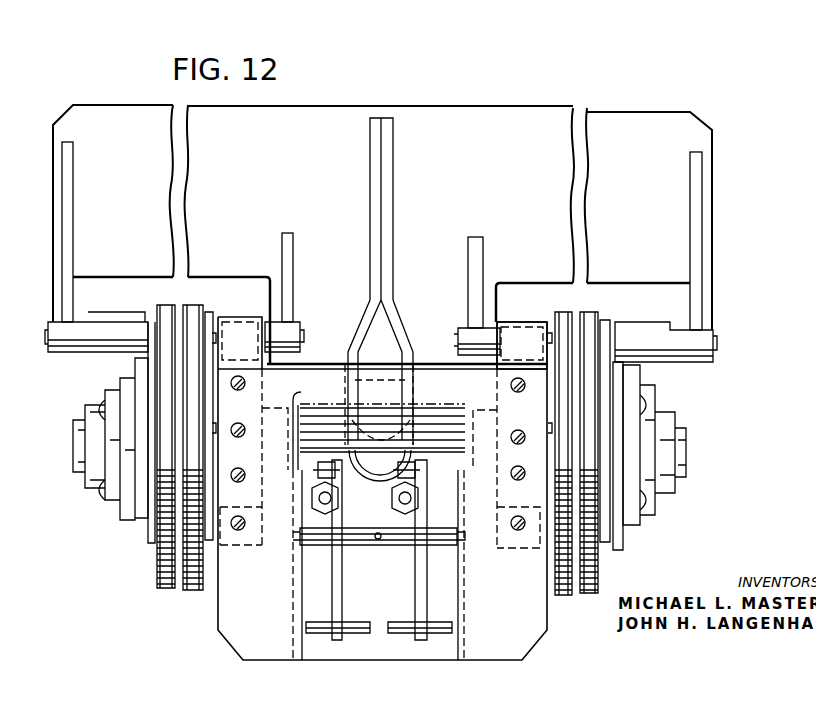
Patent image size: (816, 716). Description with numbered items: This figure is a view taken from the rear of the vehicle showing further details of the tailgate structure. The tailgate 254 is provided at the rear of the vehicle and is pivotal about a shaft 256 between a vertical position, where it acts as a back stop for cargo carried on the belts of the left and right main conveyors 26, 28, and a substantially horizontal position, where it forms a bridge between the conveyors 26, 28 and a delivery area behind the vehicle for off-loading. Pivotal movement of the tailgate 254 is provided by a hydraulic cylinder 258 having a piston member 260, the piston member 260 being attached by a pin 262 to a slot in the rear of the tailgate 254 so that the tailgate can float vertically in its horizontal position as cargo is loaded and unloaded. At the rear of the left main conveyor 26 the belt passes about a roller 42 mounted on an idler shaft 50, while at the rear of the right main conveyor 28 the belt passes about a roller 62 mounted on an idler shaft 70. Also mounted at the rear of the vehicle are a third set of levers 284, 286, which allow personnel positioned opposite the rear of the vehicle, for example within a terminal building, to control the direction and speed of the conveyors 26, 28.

The tailgate 254 is at (712, 131).
The shaft 256 is at (703, 338).
The roller 42 is at (548, 325).
The left main conveyor 26 is at (590, 328).
The piston member 260 is at (385, 378).
The pin 262 is at (415, 405).
The hydraulic cylinder 258 is at (385, 478).
The shaft 70 is at (80, 456).
The shaft 50 is at (688, 452).
The roller 62 is at (157, 576).
The right main conveyor 28 is at (168, 586).
The lever 284 is at (342, 573).
The lever 286 is at (417, 598).